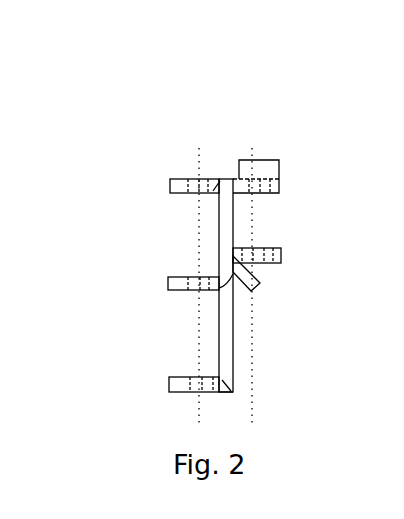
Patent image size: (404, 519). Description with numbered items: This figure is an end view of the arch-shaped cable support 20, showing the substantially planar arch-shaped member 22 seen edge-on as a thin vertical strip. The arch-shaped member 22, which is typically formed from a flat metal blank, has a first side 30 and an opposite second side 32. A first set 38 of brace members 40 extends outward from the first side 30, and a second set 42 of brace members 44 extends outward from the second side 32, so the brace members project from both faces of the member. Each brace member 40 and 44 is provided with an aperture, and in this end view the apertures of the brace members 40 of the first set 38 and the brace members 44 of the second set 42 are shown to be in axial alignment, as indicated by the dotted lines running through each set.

The arch-shaped cable support 20 is at (168, 140).
The arch-shaped member 22 is at (231, 392).
The first side 30 is at (246, 338).
The second side 32 is at (208, 252).
The first set of brace members 38 is at (283, 255).
The brace member 40 is at (275, 193).
The second set of brace members 42 is at (170, 189).
The brace member 44 is at (168, 181).